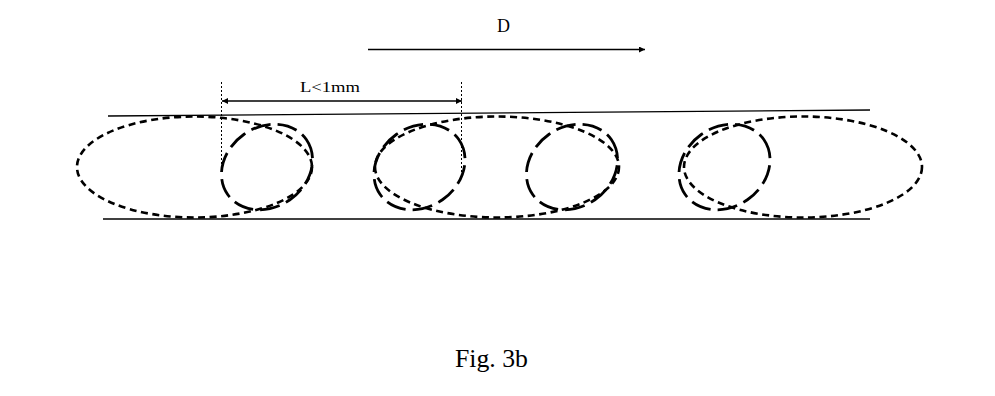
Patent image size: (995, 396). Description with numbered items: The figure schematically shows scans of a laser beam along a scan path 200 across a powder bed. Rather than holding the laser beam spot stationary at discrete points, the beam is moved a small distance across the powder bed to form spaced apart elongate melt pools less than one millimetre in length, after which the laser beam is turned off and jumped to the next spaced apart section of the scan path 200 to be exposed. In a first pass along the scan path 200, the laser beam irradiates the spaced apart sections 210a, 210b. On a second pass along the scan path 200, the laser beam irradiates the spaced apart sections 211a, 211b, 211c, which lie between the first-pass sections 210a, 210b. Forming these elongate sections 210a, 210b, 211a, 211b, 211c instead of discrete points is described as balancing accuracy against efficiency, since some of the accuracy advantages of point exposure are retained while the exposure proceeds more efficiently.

The scan path 200 is at (270, 222).
The spaced apart section 210a is at (370, 178).
The spaced apart section 210b is at (643, 197).
The spaced apart section 211a is at (188, 188).
The spaced apart section 211b is at (493, 178).
The spaced apart section 211c is at (790, 180).